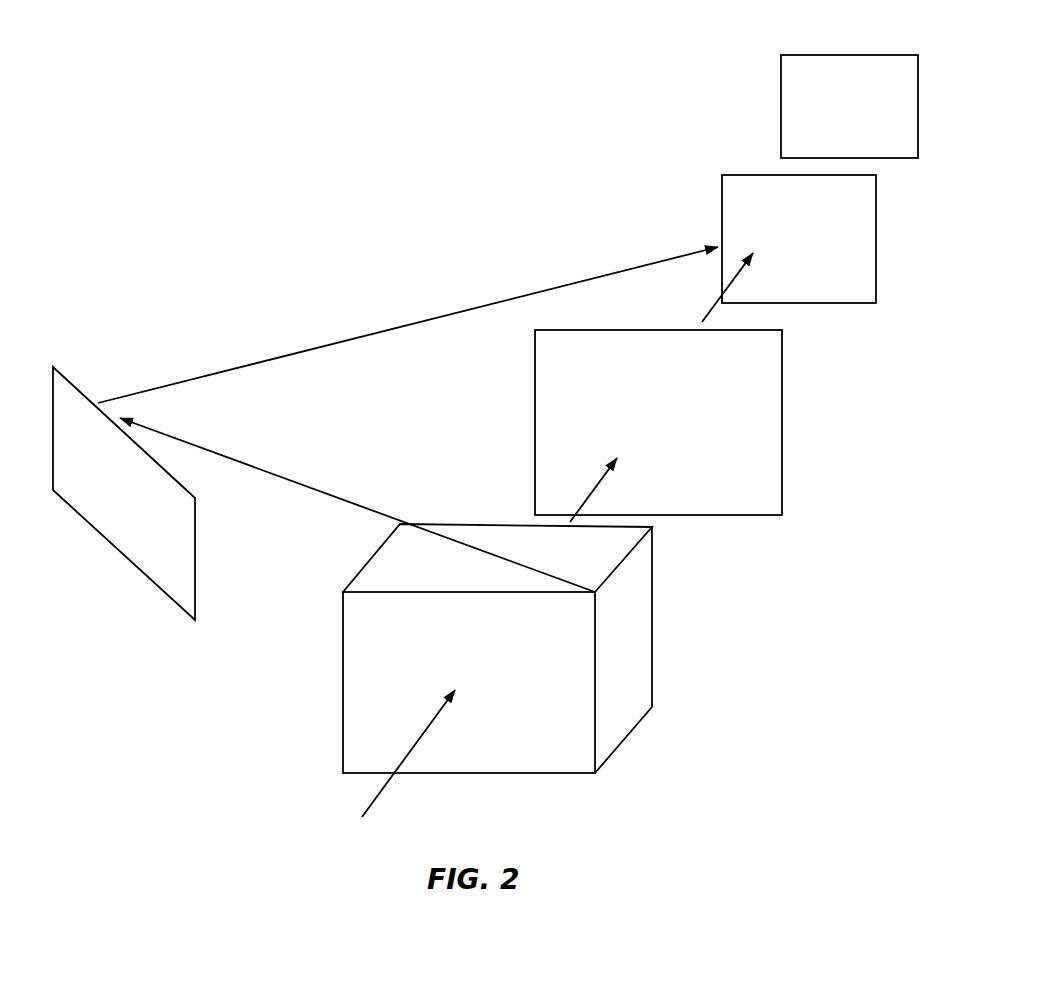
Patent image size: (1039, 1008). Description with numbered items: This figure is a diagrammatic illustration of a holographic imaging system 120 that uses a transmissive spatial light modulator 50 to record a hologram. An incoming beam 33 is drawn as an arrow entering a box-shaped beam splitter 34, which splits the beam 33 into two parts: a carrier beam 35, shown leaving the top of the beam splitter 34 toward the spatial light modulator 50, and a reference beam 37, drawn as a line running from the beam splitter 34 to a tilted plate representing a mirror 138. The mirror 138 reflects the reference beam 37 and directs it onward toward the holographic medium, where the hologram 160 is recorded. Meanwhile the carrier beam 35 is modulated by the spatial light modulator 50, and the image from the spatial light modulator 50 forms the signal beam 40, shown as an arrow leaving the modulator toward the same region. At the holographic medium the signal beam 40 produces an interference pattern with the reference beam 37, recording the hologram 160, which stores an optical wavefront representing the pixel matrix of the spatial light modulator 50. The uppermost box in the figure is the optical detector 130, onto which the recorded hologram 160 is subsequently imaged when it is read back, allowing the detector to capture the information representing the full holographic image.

The holographic imaging system 120 is at (240, 94).
The optical detector 130 is at (920, 109).
The hologram 160 is at (722, 205).
The signal beam 40 is at (730, 284).
The transmissive spatial light modulator 50 is at (782, 425).
The carrier beam 35 is at (590, 502).
The beam splitter 34 is at (653, 650).
The beam 33 is at (388, 787).
The mirror 138 is at (148, 585).
The reference beam 37 is at (335, 345).